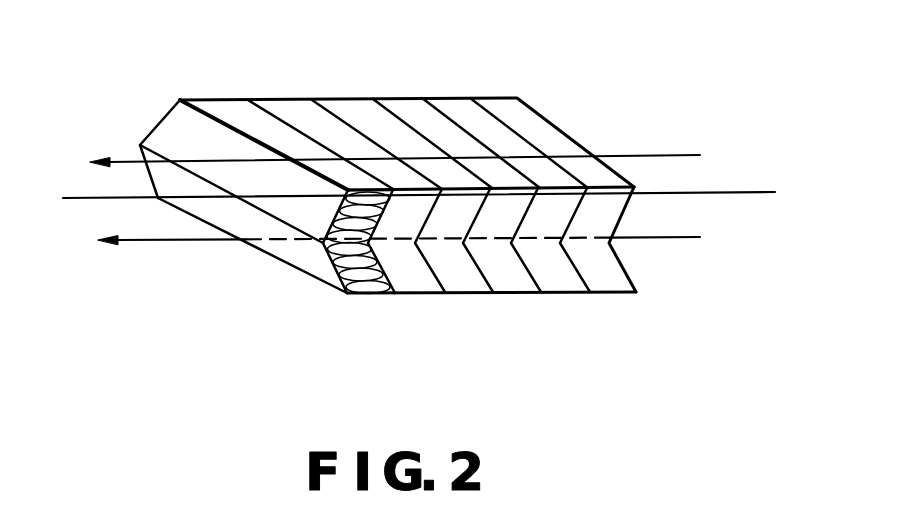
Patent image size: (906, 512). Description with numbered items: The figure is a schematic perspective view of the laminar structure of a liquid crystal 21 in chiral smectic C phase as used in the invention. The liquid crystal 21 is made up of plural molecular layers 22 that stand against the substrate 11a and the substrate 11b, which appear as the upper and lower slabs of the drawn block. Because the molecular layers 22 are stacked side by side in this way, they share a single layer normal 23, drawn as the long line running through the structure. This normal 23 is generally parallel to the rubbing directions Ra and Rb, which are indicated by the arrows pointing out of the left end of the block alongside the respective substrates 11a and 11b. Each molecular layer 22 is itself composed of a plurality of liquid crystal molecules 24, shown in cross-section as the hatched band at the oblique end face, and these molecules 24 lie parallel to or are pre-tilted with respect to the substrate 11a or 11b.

The liquid crystal 21 is at (466, 80).
The substrate 11a is at (338, 78).
The substrate 11b is at (468, 333).
The molecular layer 22 is at (320, 263).
The layer normal 23 is at (750, 192).
The liquid crystal molecules 24 is at (370, 288).
The rubbing direction Ra is at (375, 161).
The rubbing direction Rb is at (377, 241).